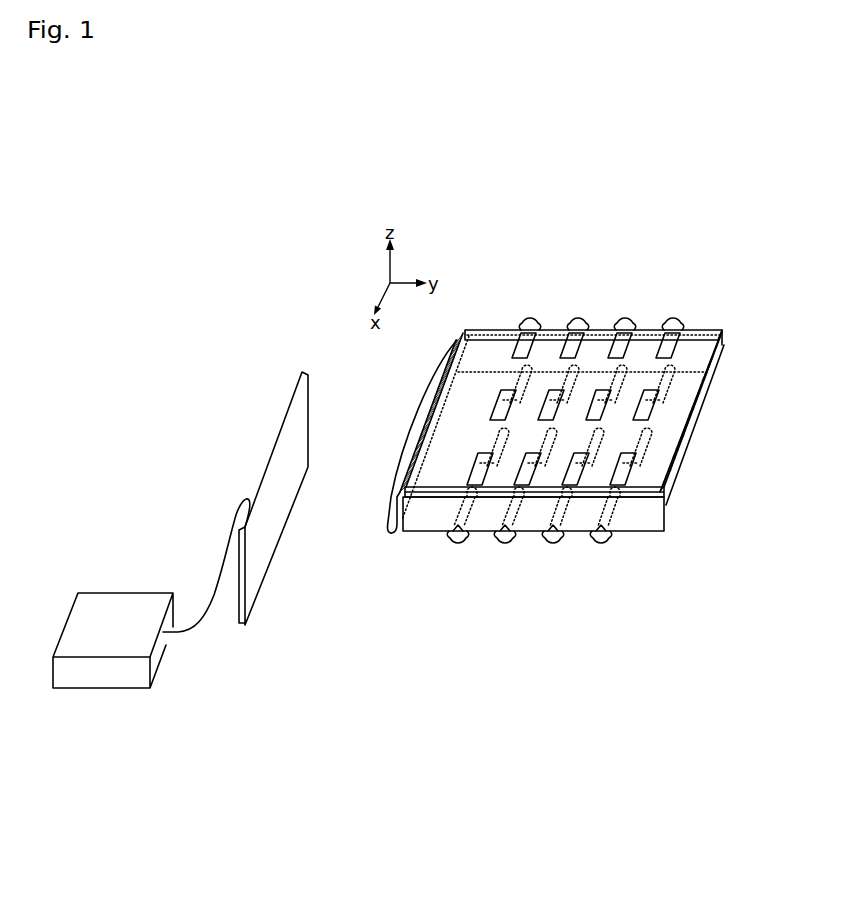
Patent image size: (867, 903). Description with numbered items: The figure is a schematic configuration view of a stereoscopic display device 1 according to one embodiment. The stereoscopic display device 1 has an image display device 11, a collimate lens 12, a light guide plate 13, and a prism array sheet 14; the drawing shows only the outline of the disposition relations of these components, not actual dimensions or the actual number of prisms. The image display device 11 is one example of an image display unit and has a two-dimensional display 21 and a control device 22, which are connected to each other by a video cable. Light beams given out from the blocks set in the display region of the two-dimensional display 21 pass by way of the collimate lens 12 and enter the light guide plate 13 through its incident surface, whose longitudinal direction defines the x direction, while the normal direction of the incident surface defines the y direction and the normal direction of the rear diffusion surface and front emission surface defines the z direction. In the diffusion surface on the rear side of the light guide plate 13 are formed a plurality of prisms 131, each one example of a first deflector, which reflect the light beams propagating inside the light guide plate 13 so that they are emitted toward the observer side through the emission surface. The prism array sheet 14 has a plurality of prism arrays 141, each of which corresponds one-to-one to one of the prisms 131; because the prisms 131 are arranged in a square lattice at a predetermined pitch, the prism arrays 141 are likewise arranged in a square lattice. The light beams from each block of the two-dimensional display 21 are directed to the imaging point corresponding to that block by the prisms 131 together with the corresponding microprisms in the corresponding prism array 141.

The stereoscopic display device 1 is at (657, 657).
The image display device 11 is at (180, 577).
The collimate lens 12 is at (394, 534).
The light guide plate 13 is at (666, 507).
The prisms 131 is at (458, 543).
The prism array sheet 14 is at (707, 328).
The prism arrays 141 is at (673, 318).
The two-dimensional display 21 is at (238, 636).
The control device 22 is at (136, 689).